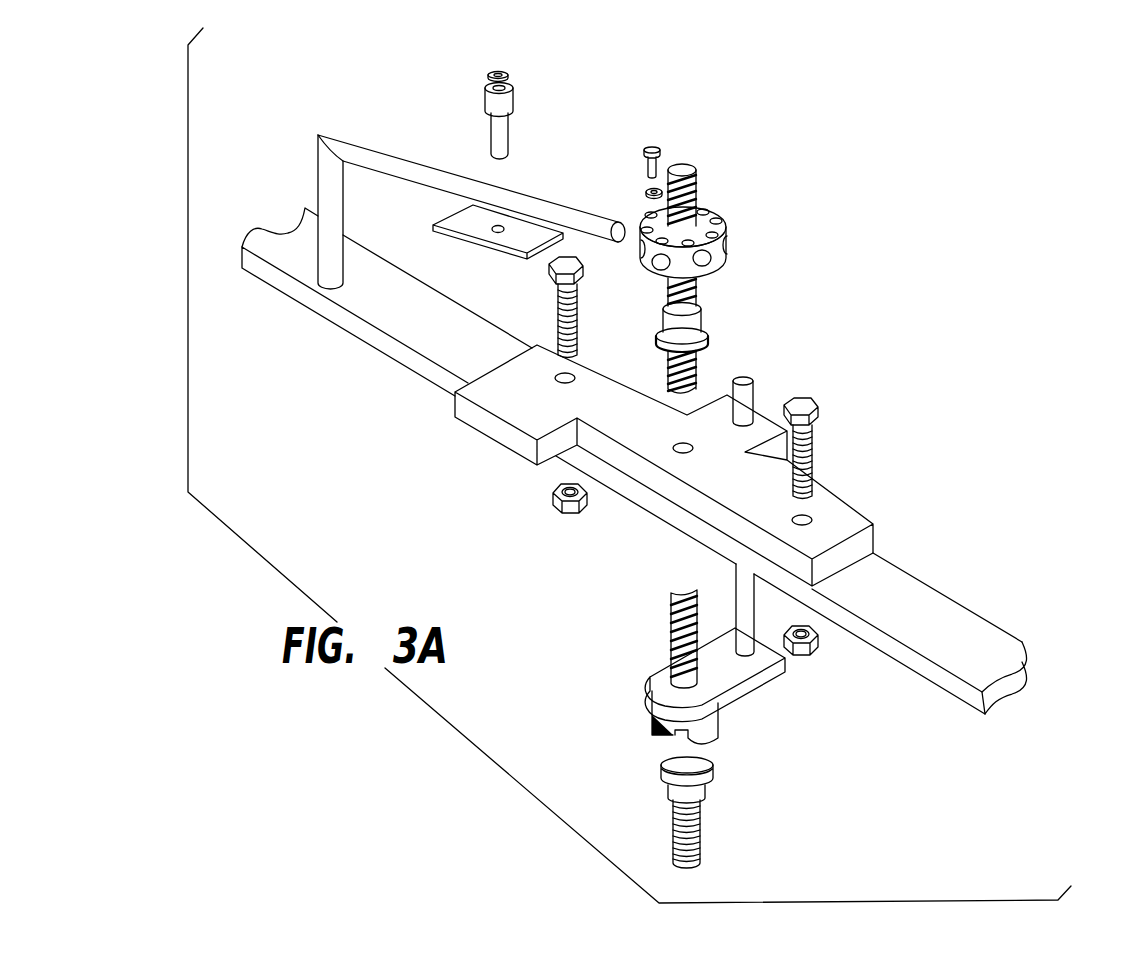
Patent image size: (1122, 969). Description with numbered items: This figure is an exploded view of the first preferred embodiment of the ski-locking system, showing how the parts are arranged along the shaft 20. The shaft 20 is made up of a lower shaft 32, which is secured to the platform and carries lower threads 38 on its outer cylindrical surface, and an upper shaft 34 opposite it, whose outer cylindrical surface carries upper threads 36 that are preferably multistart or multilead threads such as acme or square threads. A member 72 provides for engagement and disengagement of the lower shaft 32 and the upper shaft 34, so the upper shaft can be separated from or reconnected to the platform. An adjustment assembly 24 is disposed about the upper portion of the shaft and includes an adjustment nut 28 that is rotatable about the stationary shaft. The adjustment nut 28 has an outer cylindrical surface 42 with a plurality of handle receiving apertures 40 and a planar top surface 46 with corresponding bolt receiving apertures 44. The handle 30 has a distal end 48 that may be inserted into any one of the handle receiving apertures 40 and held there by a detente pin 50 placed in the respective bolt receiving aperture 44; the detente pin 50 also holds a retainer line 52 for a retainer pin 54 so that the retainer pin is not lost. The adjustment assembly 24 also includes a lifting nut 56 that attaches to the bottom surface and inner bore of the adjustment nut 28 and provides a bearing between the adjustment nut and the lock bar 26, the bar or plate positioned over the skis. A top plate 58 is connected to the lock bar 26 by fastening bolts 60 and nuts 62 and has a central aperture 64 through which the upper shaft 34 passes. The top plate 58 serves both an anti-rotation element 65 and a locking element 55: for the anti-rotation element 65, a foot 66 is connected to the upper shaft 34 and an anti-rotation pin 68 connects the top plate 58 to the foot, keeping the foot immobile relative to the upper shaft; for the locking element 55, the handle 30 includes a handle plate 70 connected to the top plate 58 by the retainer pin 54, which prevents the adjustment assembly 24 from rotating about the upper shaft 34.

The shaft 20 is at (690, 167).
The adjustment assembly 24 is at (772, 250).
The lock bar 26 is at (393, 320).
The adjustment nut 28 is at (715, 252).
The handle 30 is at (340, 134).
The lower shaft 32 is at (673, 828).
The upper shaft 34 is at (705, 180).
The upper threads 36 is at (692, 197).
The lower threads 38 is at (700, 828).
The handle receiving apertures 40 is at (652, 266).
The outer cylindrical surface 42 is at (736, 267).
The bolt receiving apertures 44 is at (650, 212).
The planar surface 46 is at (638, 248).
The distal end 48 is at (600, 224).
The detente pin 50 is at (653, 146).
The retainer line 52 is at (645, 190).
The retainer pin 54 is at (486, 136).
The locking element 55 is at (458, 106).
The lifting nut 56 is at (718, 314).
The top plate 58 is at (696, 465).
The fastening bolts 60 is at (553, 312).
The nuts 62 is at (553, 498).
The central aperture 64 is at (683, 447).
The anti-rotation element 65 is at (743, 700).
The foot 66 is at (772, 678).
The anti-rotation pin 68 is at (745, 378).
The handle plate 70 is at (458, 222).
The member 72 is at (652, 807).